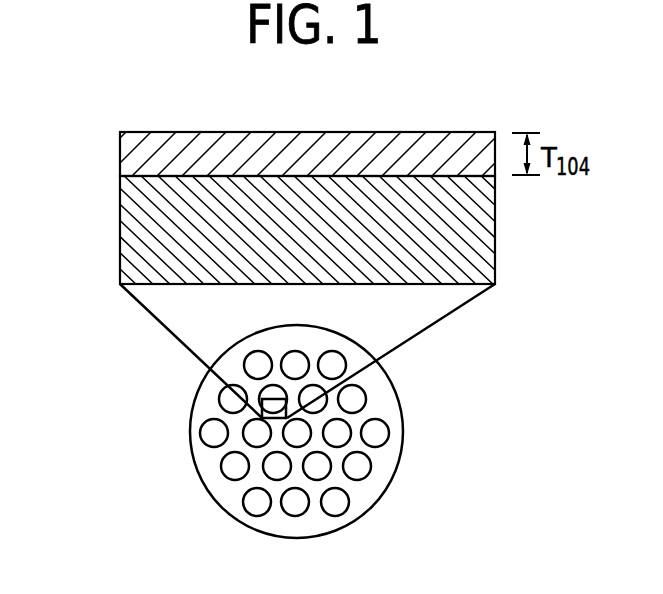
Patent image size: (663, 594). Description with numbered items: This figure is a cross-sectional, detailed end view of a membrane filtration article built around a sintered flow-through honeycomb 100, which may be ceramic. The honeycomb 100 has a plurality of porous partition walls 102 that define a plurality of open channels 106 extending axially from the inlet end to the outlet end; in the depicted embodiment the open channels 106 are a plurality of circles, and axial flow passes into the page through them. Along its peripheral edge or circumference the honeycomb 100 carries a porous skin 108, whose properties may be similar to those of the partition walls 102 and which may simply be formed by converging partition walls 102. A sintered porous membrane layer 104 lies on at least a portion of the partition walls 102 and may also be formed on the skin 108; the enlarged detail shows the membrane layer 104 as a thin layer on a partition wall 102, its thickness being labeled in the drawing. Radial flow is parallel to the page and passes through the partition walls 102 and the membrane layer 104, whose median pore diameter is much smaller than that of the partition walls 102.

The sintered flow-through honeycomb 100 is at (125, 422).
The porous partition walls 102 is at (120, 235).
The membrane layer 104 is at (120, 152).
The open channels 106 is at (340, 501).
The porous skin 108 is at (398, 465).